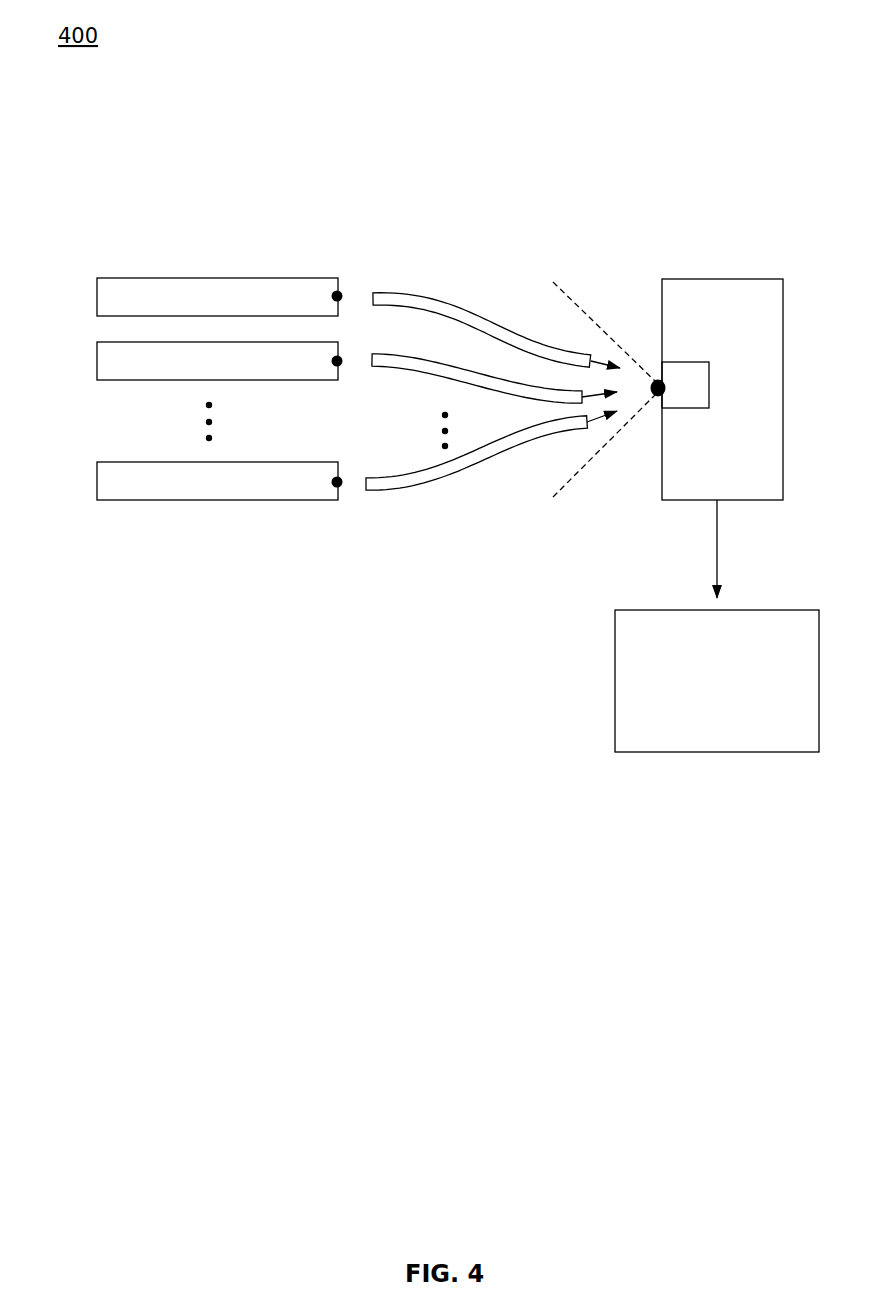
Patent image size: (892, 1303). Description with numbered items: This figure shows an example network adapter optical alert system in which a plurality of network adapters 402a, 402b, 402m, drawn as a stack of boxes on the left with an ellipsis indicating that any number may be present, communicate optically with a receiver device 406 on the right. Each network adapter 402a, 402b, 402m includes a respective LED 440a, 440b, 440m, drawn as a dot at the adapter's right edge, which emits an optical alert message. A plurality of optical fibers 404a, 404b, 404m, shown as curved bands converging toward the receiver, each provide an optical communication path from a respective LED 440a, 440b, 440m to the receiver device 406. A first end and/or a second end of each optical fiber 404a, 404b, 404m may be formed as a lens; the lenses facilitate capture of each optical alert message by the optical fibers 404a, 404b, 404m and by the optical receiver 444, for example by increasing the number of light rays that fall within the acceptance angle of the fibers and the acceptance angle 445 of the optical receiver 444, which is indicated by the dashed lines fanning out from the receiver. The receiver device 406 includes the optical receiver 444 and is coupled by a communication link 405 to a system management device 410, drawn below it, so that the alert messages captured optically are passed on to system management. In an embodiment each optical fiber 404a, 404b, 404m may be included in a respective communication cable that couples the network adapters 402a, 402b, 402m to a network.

The network adapter 402a is at (217, 297).
The network adapter 402b is at (217, 361).
The network adapter 402m is at (217, 481).
The LED 440a is at (349, 292).
The LED 440b is at (351, 356).
The LED 440m is at (350, 478).
The optical fiber 404a is at (492, 306).
The optical fiber 404b is at (428, 348).
The optical fiber 404m is at (471, 490).
The acceptance angle 445 is at (622, 299).
The optical receiver 444 is at (681, 350).
The receiver device 406 is at (722, 390).
The communication link 405 is at (698, 525).
The system management device 410 is at (717, 681).